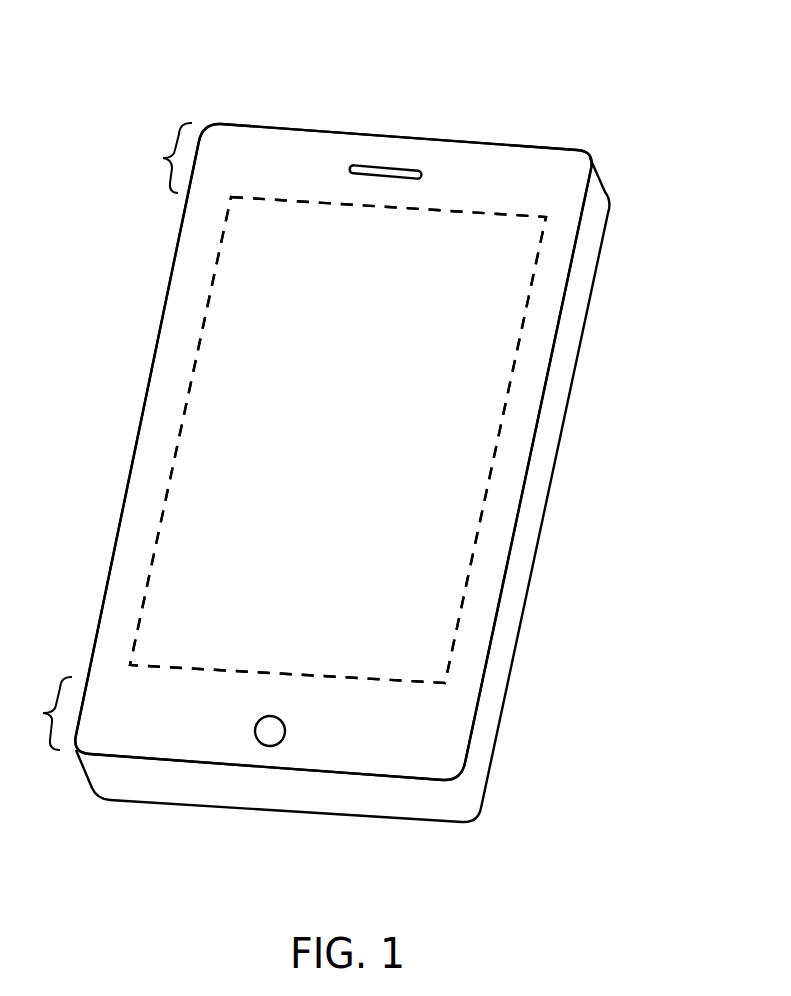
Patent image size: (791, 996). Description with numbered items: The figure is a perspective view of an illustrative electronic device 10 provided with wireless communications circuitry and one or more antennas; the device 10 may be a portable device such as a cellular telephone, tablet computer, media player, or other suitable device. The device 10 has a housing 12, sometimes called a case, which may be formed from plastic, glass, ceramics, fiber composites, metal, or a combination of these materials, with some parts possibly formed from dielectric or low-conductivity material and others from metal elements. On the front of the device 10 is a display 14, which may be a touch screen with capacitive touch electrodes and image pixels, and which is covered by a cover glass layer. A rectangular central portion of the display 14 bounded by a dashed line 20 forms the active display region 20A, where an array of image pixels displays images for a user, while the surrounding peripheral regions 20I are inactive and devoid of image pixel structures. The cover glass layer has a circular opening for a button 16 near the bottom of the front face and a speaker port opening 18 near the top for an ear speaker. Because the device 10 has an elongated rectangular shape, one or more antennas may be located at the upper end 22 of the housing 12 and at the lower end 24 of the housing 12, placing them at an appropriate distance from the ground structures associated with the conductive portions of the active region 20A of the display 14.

The electronic device 10 is at (668, 70).
The housing 12 is at (593, 297).
The display 14 is at (483, 432).
The button 16 is at (268, 748).
The speaker port opening 18 is at (380, 167).
The dashed line 20 is at (170, 464).
The active display region 20A is at (185, 552).
The peripheral regions 20I is at (474, 167).
The upper end 22 is at (160, 158).
The lower end 24 is at (41, 713).